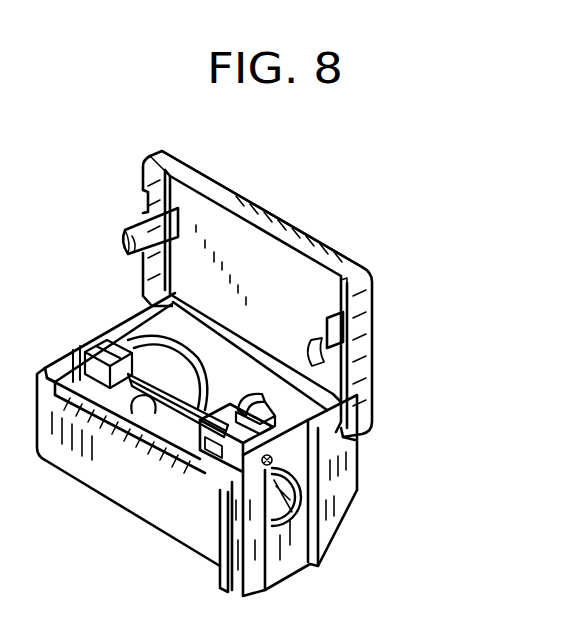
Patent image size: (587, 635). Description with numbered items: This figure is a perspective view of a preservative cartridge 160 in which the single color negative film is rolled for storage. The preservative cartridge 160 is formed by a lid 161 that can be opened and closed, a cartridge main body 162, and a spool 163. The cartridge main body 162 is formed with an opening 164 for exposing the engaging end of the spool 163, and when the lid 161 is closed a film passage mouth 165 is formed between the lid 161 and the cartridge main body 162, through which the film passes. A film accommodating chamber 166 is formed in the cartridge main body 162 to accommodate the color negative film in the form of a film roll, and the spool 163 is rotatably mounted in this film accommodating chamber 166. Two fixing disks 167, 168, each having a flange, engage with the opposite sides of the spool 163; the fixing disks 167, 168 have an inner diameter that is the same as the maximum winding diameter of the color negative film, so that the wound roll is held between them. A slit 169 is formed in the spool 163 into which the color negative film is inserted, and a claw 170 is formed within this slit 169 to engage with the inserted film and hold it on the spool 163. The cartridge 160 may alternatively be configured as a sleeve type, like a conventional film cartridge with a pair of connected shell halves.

The preservative cartridge 160 is at (287, 376).
The lid 161 is at (362, 302).
The cartridge main body 162 is at (333, 523).
The spool 163 is at (222, 388).
The opening 164 is at (290, 528).
The film passage mouth 165 is at (254, 220).
The film accommodating chamber 166 is at (188, 327).
The fixing disk 167 is at (108, 360).
The fixing disk 168 is at (273, 397).
The slit 169 is at (135, 413).
The claw 170 is at (173, 418).